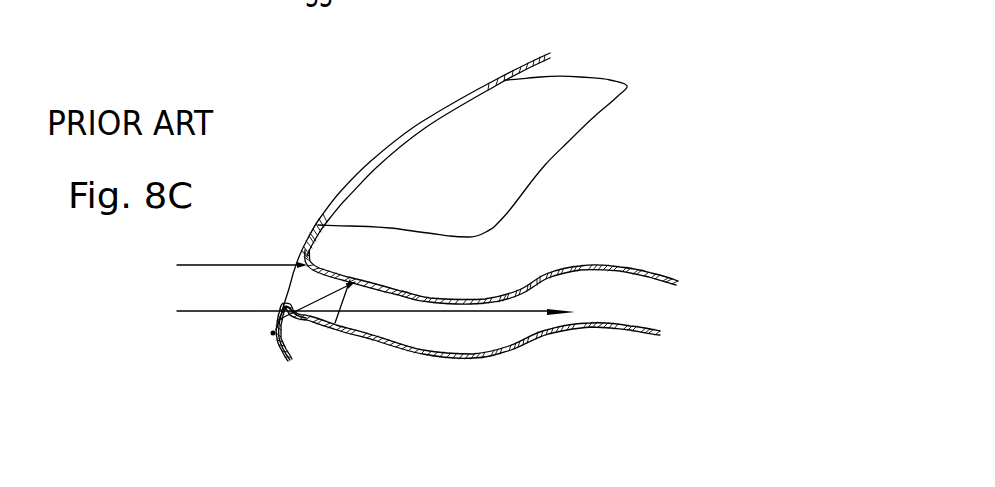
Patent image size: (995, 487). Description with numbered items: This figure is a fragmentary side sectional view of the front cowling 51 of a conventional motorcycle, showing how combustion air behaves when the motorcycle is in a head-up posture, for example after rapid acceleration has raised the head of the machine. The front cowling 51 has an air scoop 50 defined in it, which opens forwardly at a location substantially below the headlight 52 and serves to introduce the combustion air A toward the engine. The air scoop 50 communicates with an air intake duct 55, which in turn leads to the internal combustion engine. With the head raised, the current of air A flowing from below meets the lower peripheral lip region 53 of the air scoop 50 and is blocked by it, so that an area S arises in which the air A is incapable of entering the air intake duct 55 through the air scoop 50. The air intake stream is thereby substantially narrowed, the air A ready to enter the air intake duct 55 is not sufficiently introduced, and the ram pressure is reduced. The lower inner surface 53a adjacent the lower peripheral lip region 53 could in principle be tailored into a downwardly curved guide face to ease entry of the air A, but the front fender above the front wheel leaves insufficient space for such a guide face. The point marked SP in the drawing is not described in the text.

The air scoop 50 is at (305, 288).
The front cowling 51 is at (519, 62).
The headlight 52 is at (521, 152).
The lower peripheral lip region 53 is at (288, 318).
The lower inner surface 53a is at (297, 320).
The air intake duct 55 is at (522, 338).
The combustion air A is at (246, 265).
The area S is at (271, 335).
The separation point SP is at (248, 346).